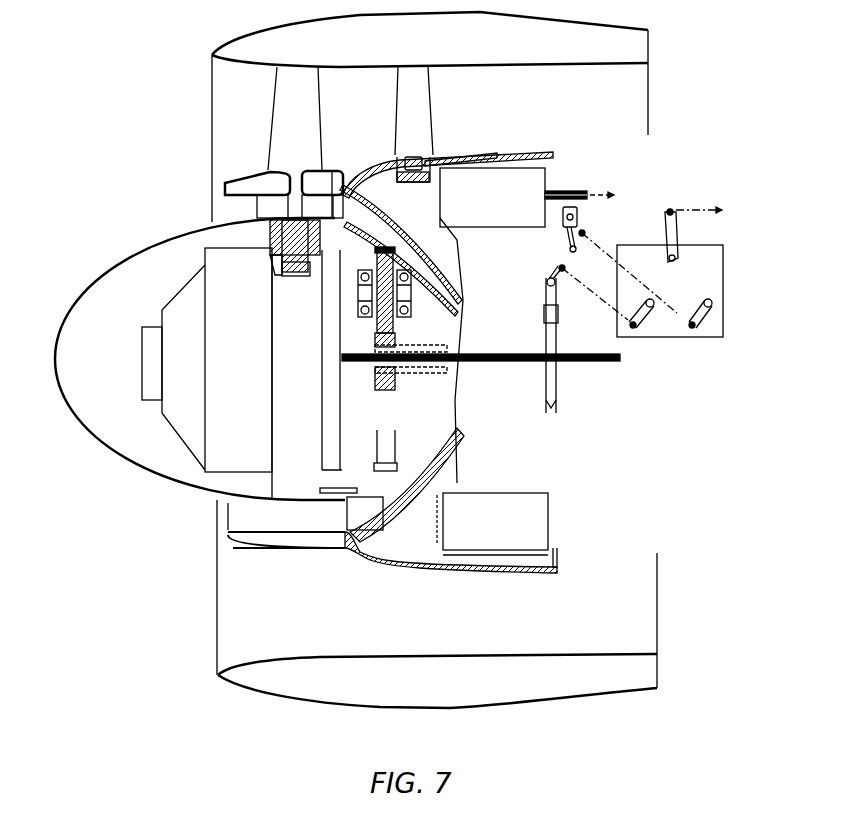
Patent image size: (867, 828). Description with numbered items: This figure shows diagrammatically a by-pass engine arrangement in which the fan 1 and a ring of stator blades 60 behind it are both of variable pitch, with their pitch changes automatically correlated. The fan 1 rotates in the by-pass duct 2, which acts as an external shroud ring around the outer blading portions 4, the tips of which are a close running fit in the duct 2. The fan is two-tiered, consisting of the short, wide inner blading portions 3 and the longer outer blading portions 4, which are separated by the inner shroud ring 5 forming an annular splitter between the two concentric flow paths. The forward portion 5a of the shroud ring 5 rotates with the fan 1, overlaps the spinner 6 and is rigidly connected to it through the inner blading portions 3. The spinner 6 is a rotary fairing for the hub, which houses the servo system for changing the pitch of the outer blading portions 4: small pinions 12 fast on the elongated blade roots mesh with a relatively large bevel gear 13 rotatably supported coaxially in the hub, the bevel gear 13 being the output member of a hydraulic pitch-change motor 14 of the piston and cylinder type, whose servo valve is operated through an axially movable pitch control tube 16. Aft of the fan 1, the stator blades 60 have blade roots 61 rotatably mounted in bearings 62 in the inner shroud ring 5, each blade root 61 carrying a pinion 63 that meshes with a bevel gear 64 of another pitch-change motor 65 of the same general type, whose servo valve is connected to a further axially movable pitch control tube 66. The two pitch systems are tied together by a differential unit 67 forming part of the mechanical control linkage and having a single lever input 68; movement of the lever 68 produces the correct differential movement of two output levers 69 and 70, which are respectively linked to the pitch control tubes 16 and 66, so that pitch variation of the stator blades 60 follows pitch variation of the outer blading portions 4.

The fan 1 is at (262, 168).
The by-pass duct 2 is at (217, 50).
The inner annular blading portions 3 is at (255, 210).
The outer annular blading portions 4 is at (278, 115).
The inner shroud ring 5 is at (378, 160).
The forward portion of inner shroud ring 5a is at (225, 186).
The spinner 6 is at (82, 303).
The pinions 12 is at (303, 276).
The bevel gear 13 is at (270, 277).
The pitch-change motor 14 is at (174, 304).
The pitch control tube 16 is at (508, 367).
The stator blades 60 is at (427, 88).
The blade roots 61 is at (414, 156).
The bearings 62 is at (406, 157).
The pinion 63 is at (418, 184).
The bevel gear 64 is at (466, 163).
The pitch-change motor 65 is at (493, 217).
The pitch control tube 66 is at (553, 190).
The differential unit 67 is at (640, 252).
The lever input 68 is at (665, 222).
The output lever 69 is at (643, 322).
The output lever 70 is at (698, 322).